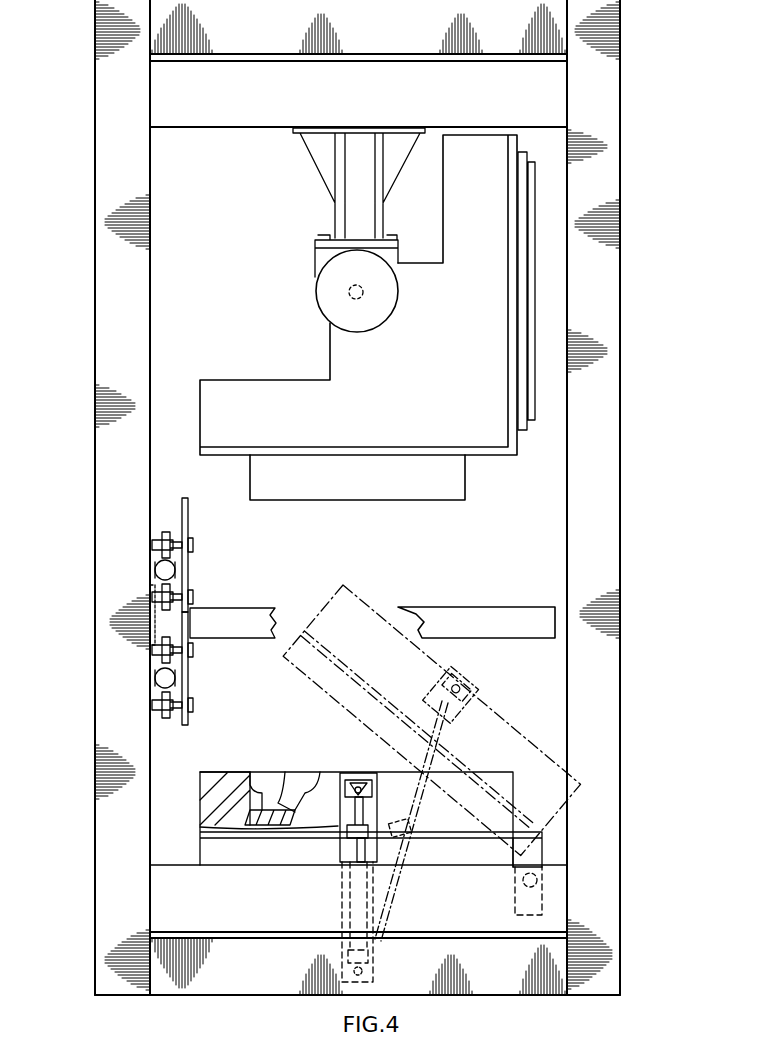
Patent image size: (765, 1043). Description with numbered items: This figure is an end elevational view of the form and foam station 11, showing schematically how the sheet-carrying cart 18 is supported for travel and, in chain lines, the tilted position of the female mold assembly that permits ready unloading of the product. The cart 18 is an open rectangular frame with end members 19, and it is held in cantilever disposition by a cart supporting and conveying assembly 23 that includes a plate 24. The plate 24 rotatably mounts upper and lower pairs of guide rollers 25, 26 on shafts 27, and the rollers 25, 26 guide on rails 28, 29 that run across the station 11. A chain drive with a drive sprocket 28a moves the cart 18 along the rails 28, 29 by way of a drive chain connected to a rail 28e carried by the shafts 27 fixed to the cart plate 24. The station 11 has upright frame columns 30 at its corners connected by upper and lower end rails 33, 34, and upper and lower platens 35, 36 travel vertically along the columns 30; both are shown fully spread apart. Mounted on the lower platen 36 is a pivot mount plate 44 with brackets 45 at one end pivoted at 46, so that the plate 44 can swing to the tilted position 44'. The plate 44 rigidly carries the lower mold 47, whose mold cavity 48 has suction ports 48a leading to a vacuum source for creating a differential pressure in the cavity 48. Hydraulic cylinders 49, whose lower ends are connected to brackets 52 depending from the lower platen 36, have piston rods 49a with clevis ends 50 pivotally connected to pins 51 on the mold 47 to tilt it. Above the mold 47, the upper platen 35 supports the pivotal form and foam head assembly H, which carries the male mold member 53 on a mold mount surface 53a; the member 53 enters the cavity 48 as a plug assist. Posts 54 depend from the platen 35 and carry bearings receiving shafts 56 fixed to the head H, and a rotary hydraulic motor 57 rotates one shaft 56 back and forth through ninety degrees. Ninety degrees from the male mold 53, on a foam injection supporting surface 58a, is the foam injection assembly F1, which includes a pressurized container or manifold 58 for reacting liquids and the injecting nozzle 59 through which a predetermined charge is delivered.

The form and foam station 11 is at (632, 770).
The sheet-carrying cart 18 is at (513, 602).
The end members 19 is at (445, 615).
The cart supporting and conveying assembly 23 is at (192, 570).
The plate 24 is at (190, 685).
The upper guide rollers 25 is at (152, 538).
The lower guide rollers 26 is at (173, 655).
The shafts 27 is at (173, 538).
The rail 28 is at (157, 570).
The drive sprocket 28a is at (152, 622).
The rail 28e is at (150, 592).
The rail 29 is at (155, 676).
The upright frame columns 30 is at (102, 220).
The upper end rail 33 is at (385, 38).
The lower end rail 34 is at (465, 980).
The upper platen 35 is at (345, 101).
The lower platen 36 is at (424, 916).
The pivot mount plate 44 is at (349, 819).
The tilted position of pivot mount plate 44' is at (425, 703).
The brackets 45 is at (537, 858).
The pivot 46 is at (543, 902).
The lower mold 47 is at (217, 792).
The mold cavity 48 is at (255, 775).
The suction ports 48a is at (285, 775).
The hydraulic cylinders 49 is at (355, 855).
The piston rods 49a is at (353, 820).
The clevis ends 50 is at (355, 778).
The pins 51 is at (443, 702).
The brackets 52 is at (343, 903).
The male mold member 53 is at (355, 486).
The mold mount surface 53a is at (487, 457).
The posts 54 is at (347, 170).
The shafts 56 is at (363, 295).
The rotary hydraulic motor 57 is at (375, 318).
The container or manifold 58 is at (520, 395).
The foam injection supporting surface 58a is at (510, 242).
The injecting nozzle 59 is at (533, 290).
The foam injection assembly F1 is at (547, 312).
The form and foam head assembly H is at (397, 396).